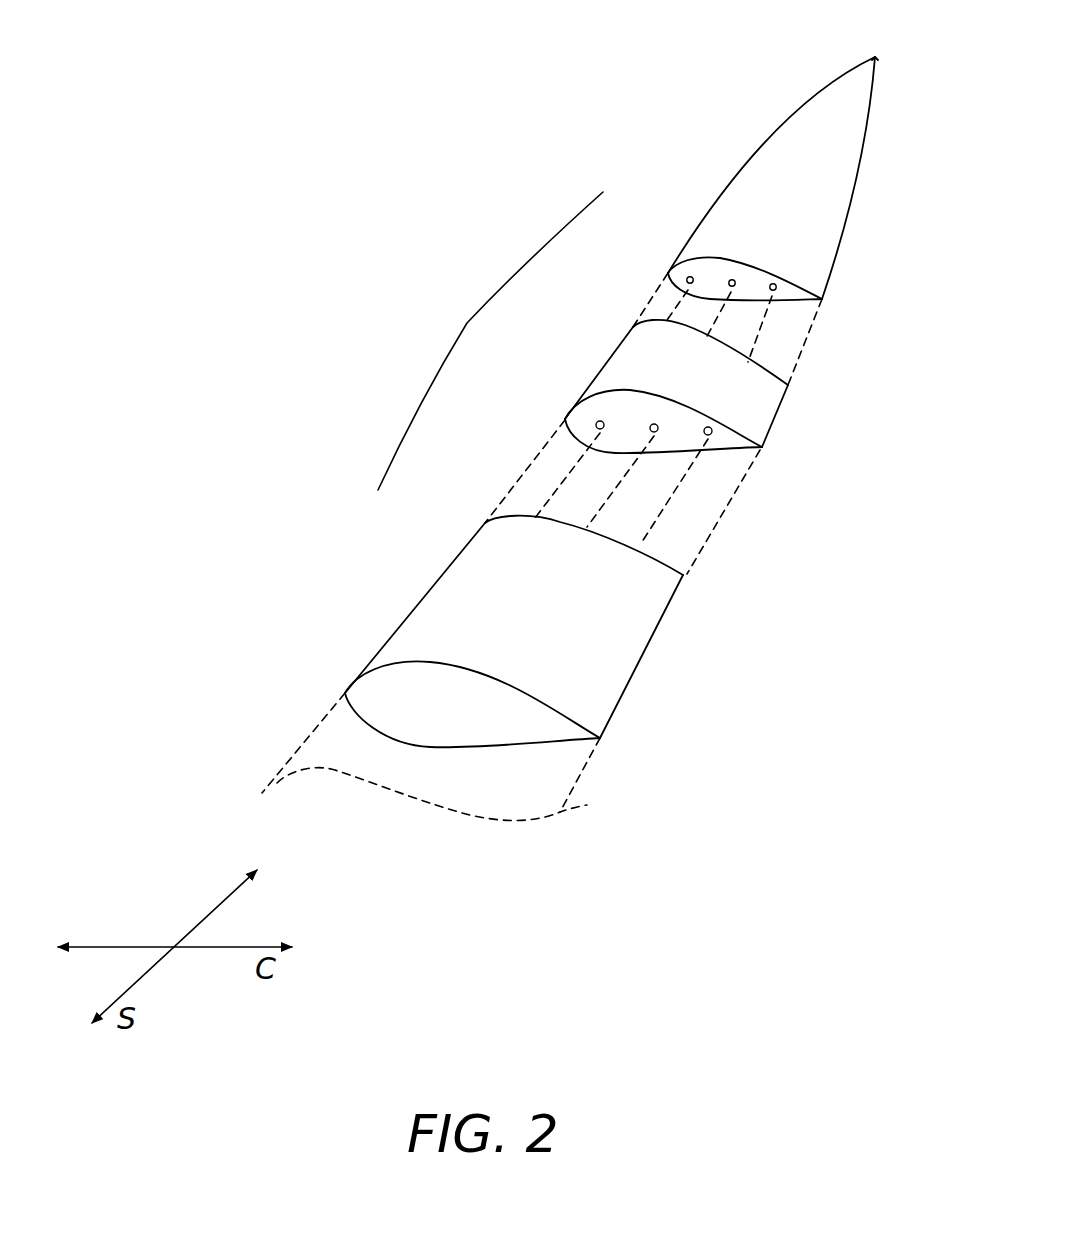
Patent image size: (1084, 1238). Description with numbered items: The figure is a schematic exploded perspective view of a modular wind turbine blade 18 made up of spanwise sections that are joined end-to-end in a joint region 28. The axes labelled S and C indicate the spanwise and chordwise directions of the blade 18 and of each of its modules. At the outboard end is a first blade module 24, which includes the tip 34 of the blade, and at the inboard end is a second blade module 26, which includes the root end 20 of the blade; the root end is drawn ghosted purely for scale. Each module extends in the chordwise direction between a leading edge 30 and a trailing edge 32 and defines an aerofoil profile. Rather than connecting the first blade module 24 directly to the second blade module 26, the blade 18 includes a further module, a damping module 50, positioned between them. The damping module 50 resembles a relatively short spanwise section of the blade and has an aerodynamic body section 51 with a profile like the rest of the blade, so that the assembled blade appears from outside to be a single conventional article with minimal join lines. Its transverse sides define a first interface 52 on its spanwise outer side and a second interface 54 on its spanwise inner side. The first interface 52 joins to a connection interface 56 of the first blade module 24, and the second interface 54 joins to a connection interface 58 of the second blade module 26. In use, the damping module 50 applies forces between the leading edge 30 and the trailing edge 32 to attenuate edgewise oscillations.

The modular wind turbine blade 18 is at (280, 218).
The root end 20 is at (393, 647).
The first blade module 24 is at (892, 207).
The second blade module 26 is at (742, 663).
The joint region 28 is at (490, 341).
The leading edge 30 is at (567, 401).
The trailing edge 32 is at (787, 407).
The tip 34 is at (877, 55).
The damping module 50 is at (833, 440).
The aerodynamic body section 51 is at (615, 359).
The first interface 52 is at (728, 447).
The second interface 54 is at (755, 353).
The connection interface 56 is at (755, 283).
The connection interface 58 is at (653, 557).